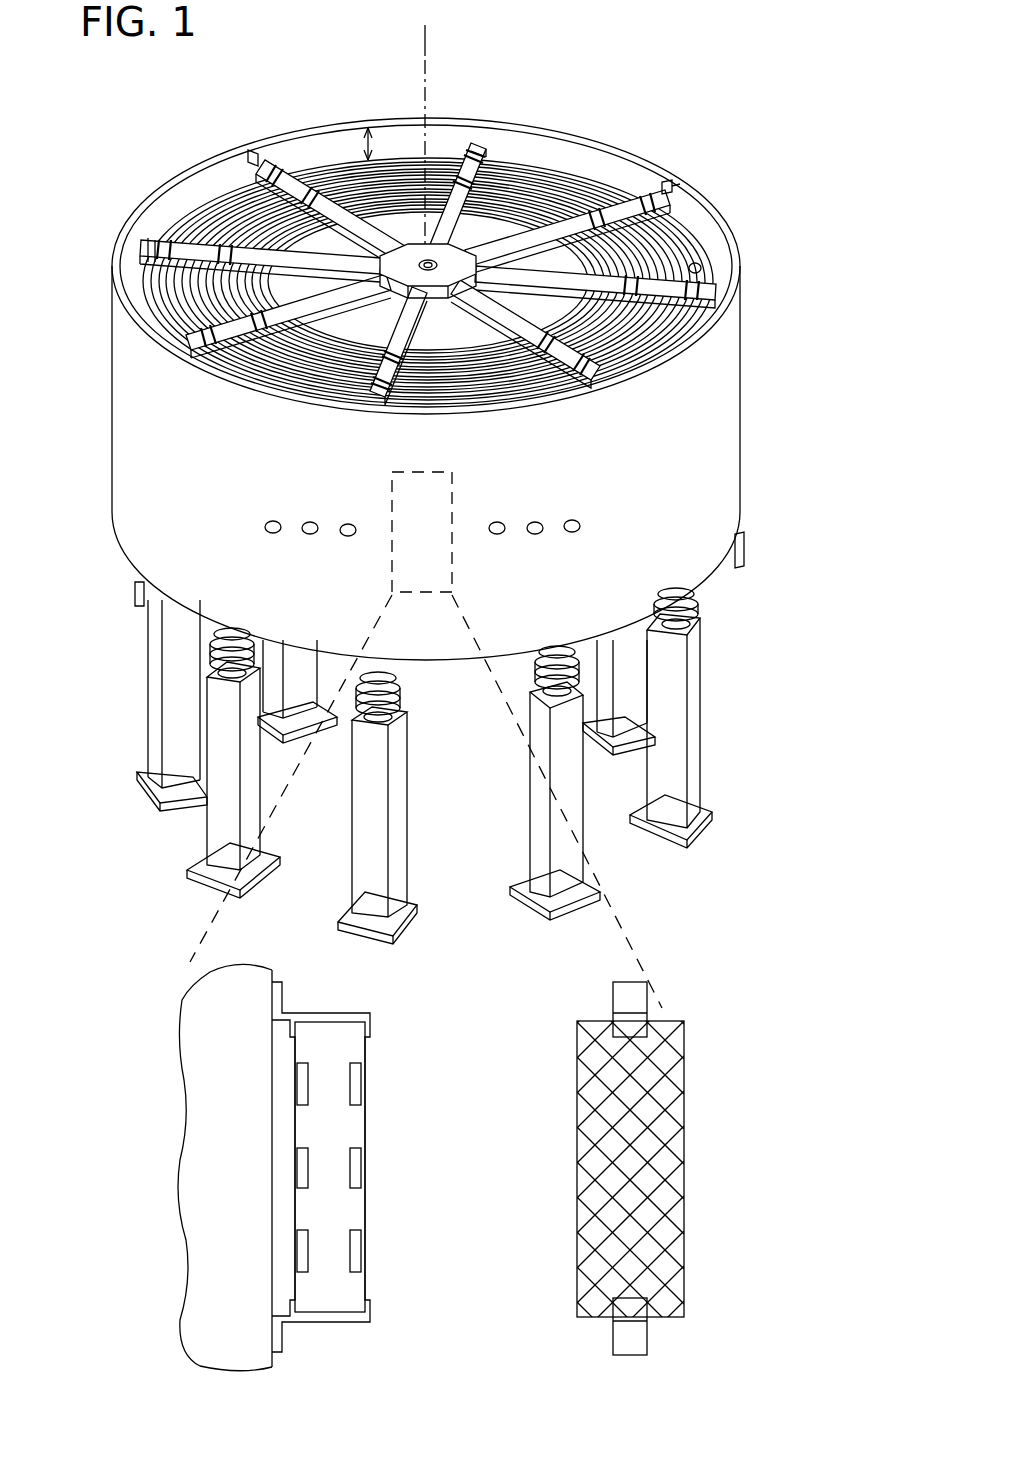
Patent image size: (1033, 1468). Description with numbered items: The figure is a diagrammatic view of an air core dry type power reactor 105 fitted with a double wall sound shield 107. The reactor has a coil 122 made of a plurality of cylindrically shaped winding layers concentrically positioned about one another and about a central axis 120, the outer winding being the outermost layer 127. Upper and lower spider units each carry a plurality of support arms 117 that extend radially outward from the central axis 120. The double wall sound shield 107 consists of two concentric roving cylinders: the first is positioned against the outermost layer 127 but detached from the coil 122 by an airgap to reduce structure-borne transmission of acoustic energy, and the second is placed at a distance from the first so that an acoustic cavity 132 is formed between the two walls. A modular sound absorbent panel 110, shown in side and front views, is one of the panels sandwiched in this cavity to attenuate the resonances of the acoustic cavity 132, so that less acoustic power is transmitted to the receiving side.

The air core dry type power reactor 105 is at (735, 62).
The double wall sound shield 107 is at (375, 140).
The sound absorbent panel 110 is at (380, 1065).
The support arm 117 is at (233, 333).
The central axis 120 is at (426, 56).
The coil 122 is at (562, 200).
The outermost layer 127 is at (703, 270).
The acoustic cavity 132 is at (515, 148).